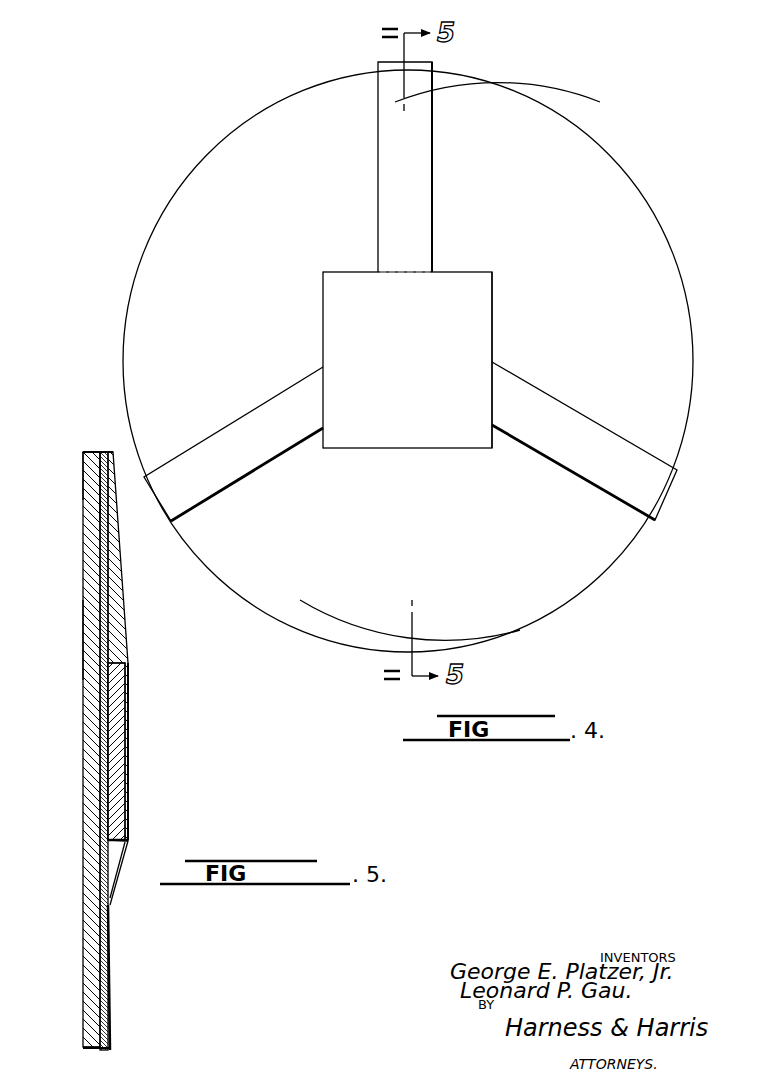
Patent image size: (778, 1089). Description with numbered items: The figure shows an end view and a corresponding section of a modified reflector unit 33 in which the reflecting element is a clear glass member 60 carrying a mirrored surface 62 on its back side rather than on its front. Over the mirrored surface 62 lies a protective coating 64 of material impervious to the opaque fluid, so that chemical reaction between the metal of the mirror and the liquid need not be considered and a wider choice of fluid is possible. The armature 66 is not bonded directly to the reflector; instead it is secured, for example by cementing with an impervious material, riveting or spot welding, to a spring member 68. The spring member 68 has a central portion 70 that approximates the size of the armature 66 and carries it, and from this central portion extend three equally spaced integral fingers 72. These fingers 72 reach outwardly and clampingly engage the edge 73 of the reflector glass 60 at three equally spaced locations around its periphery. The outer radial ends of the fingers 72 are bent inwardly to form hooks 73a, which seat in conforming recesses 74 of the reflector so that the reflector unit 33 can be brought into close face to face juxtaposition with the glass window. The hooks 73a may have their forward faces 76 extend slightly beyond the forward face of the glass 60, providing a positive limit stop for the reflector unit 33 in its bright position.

In FIG. 5, the reflector unit 33 is at (82, 634).
In FIG. 4, the clear glass member 60 is at (512, 88).
In FIG. 5, the clear glass member 60 is at (90, 728).
In FIG. 5, the mirrored surface 62 is at (102, 641).
In FIG. 4, the protective coating 64 is at (530, 125).
In FIG. 5, the protective coating 64 is at (109, 974).
In FIG. 5, the armature 66 is at (117, 767).
In FIG. 4, the spring member 68 is at (493, 325).
In FIG. 5, the spring member 68 is at (129, 718).
In FIG. 4, the central portion 70 is at (413, 354).
In FIG. 4, the fingers 72 is at (389, 125).
In FIG. 5, the fingers 72 is at (122, 561).
In FIG. 4, the edge 73 is at (318, 640).
In FIG. 5, the edge 73 is at (95, 1049).
In FIG. 5, the hooks 73a is at (98, 451).
In FIG. 5, the recesses 74 is at (103, 472).
In FIG. 5, the forward faces 76 is at (90, 478).